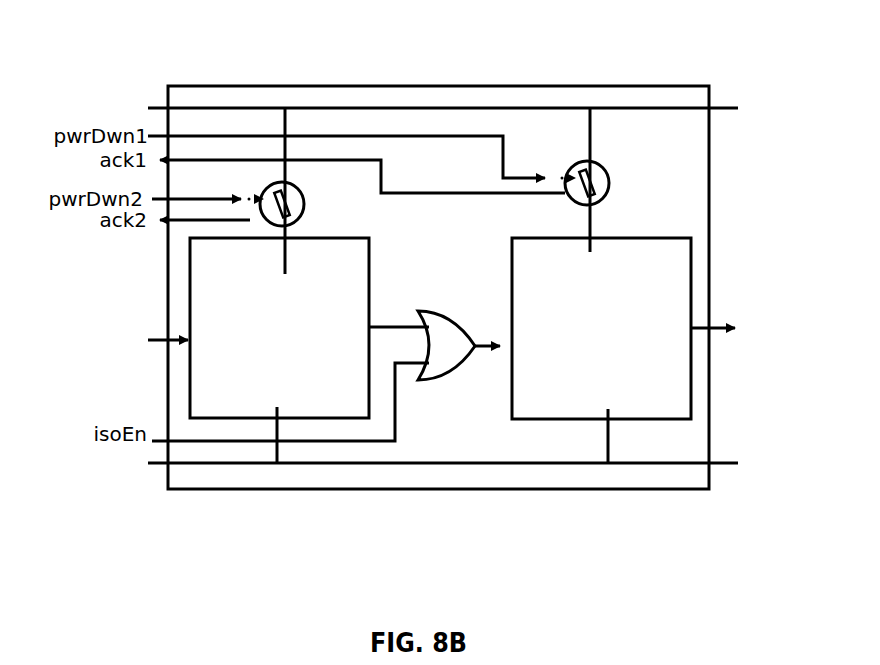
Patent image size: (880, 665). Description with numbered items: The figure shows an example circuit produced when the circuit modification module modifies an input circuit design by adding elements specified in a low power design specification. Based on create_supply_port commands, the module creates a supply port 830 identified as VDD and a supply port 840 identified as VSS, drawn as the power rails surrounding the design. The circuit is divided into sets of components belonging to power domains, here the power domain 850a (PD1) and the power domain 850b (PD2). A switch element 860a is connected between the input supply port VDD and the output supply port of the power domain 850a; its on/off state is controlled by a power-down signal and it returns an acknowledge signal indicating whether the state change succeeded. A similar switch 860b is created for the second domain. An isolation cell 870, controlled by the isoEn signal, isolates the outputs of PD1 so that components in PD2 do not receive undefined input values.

The supply port 830 is at (185, 108).
The supply port 840 is at (352, 463).
The power domain 850a is at (230, 418).
The power domain 850b is at (648, 419).
The switch element 860a is at (299, 186).
The switch 860b is at (601, 166).
The isolation cell 870 is at (448, 378).